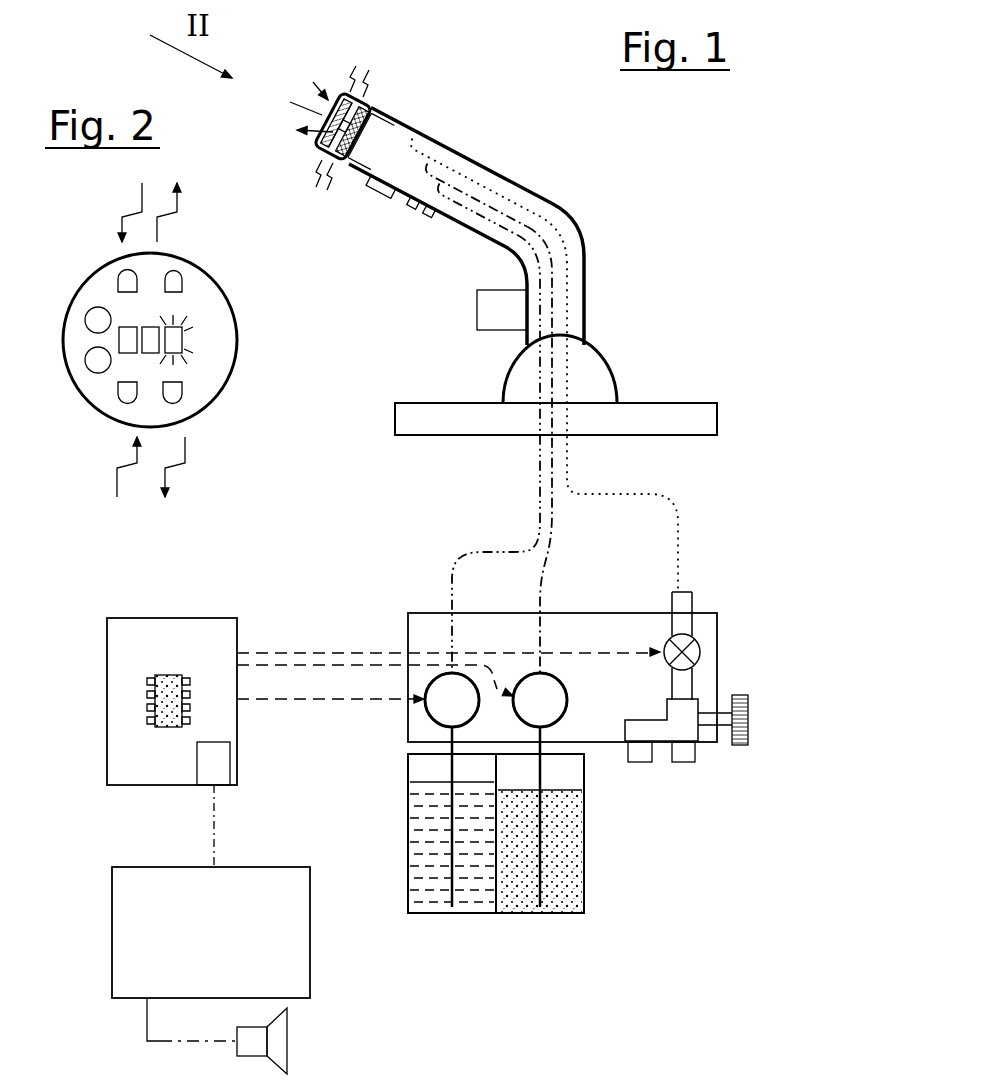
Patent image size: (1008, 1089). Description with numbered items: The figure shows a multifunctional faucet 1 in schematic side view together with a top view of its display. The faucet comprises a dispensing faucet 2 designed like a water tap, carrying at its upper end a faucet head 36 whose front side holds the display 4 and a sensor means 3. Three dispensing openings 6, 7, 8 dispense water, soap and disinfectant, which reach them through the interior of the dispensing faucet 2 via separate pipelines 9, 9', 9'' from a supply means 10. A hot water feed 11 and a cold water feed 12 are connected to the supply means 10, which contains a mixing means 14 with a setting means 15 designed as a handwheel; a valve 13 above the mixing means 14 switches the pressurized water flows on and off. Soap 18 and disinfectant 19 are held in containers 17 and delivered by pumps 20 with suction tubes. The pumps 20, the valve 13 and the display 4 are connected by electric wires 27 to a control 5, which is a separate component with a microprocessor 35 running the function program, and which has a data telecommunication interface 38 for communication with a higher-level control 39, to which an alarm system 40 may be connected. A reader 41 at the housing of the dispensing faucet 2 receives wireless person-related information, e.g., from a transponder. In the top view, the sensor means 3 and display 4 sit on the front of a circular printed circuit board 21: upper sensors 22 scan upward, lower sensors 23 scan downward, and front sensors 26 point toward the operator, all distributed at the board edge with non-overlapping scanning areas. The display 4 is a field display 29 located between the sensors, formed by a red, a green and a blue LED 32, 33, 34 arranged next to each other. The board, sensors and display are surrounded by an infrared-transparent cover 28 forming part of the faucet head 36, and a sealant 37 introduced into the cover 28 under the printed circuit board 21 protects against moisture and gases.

In FIG. 1, the multifunctional faucet 1 is at (616, 222).
In FIG. 1, the dispensing faucet 2 is at (470, 168).
In FIG. 1, the sensor means 3 is at (340, 93).
In FIG. 2, the sensor means 3 is at (190, 255).
In FIG. 1, the display 4 is at (333, 123).
In FIG. 2, the display 4 is at (133, 340).
In FIG. 1, the control 5 is at (197, 640).
In FIG. 1, the dispensing opening 6 is at (387, 183).
In FIG. 1, the dispensing opening 7 is at (413, 200).
In FIG. 1, the dispensing opening 8 is at (428, 258).
In FIG. 1, the pipeline 9 is at (561, 365).
In FIG. 1, the pipeline 9' is at (514, 418).
In FIG. 1, the pipeline 9'' is at (487, 428).
In FIG. 1, the supply means 10 is at (430, 607).
In FIG. 1, the water feed 11 is at (640, 750).
In FIG. 1, the water feed 12 is at (684, 752).
In FIG. 1, the valve 13 is at (663, 643).
In FIG. 1, the mixing means 14 is at (703, 682).
In FIG. 1, the setting means 15 is at (741, 745).
In FIG. 1, the container 17 is at (405, 862).
In FIG. 1, the soap 18 is at (562, 893).
In FIG. 1, the disinfectant 19 is at (478, 893).
In FIG. 1, the pump 20 is at (447, 699).
In FIG. 1, the printed circuit board 21 is at (357, 105).
In FIG. 2, the printed circuit board 21 is at (77, 340).
In FIG. 2, the upper sensor 22 is at (122, 280).
In FIG. 2, the lower sensor 23 is at (177, 392).
In FIG. 2, the front sensor 26 is at (98, 362).
In FIG. 1, the electric wires 27 is at (330, 653).
In FIG. 1, the cover 28 is at (392, 110).
In FIG. 2, the field display 29 is at (192, 357).
In FIG. 2, the red LED 32 is at (126, 327).
In FIG. 2, the green LED 33 is at (148, 327).
In FIG. 2, the blue LED 34 is at (183, 337).
In FIG. 1, the microprocessor 35 is at (167, 722).
In FIG. 1, the faucet head 36 is at (417, 120).
In FIG. 1, the sealant 37 is at (350, 152).
In FIG. 1, the data telecommunication interface 38 is at (217, 763).
In FIG. 1, the higher-level control 39 is at (280, 922).
In FIG. 1, the alarm system 40 is at (277, 1041).
In FIG. 1, the reader 41 is at (490, 316).